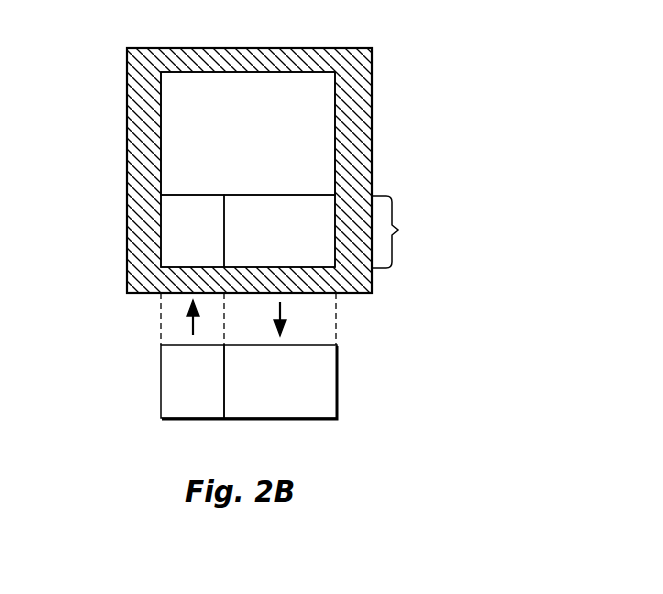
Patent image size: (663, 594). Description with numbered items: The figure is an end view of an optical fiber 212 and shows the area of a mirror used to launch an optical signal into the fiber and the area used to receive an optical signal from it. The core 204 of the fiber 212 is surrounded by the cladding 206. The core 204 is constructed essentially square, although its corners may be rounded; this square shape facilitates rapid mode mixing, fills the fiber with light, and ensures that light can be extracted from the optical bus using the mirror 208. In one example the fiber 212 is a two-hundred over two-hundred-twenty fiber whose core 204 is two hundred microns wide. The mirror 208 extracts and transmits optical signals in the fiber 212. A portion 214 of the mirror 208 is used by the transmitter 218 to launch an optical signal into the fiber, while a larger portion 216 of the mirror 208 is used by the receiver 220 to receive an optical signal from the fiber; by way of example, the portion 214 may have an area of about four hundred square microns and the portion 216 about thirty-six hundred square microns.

The fiber 212 is at (317, 48).
The cladding 206 is at (357, 105).
The core 204 is at (307, 145).
The mirror 208 is at (398, 230).
The portion of the mirror 214 is at (185, 239).
The portion of the mirror 216 is at (313, 241).
The transmitter 218 is at (193, 418).
The receiver 220 is at (280, 418).